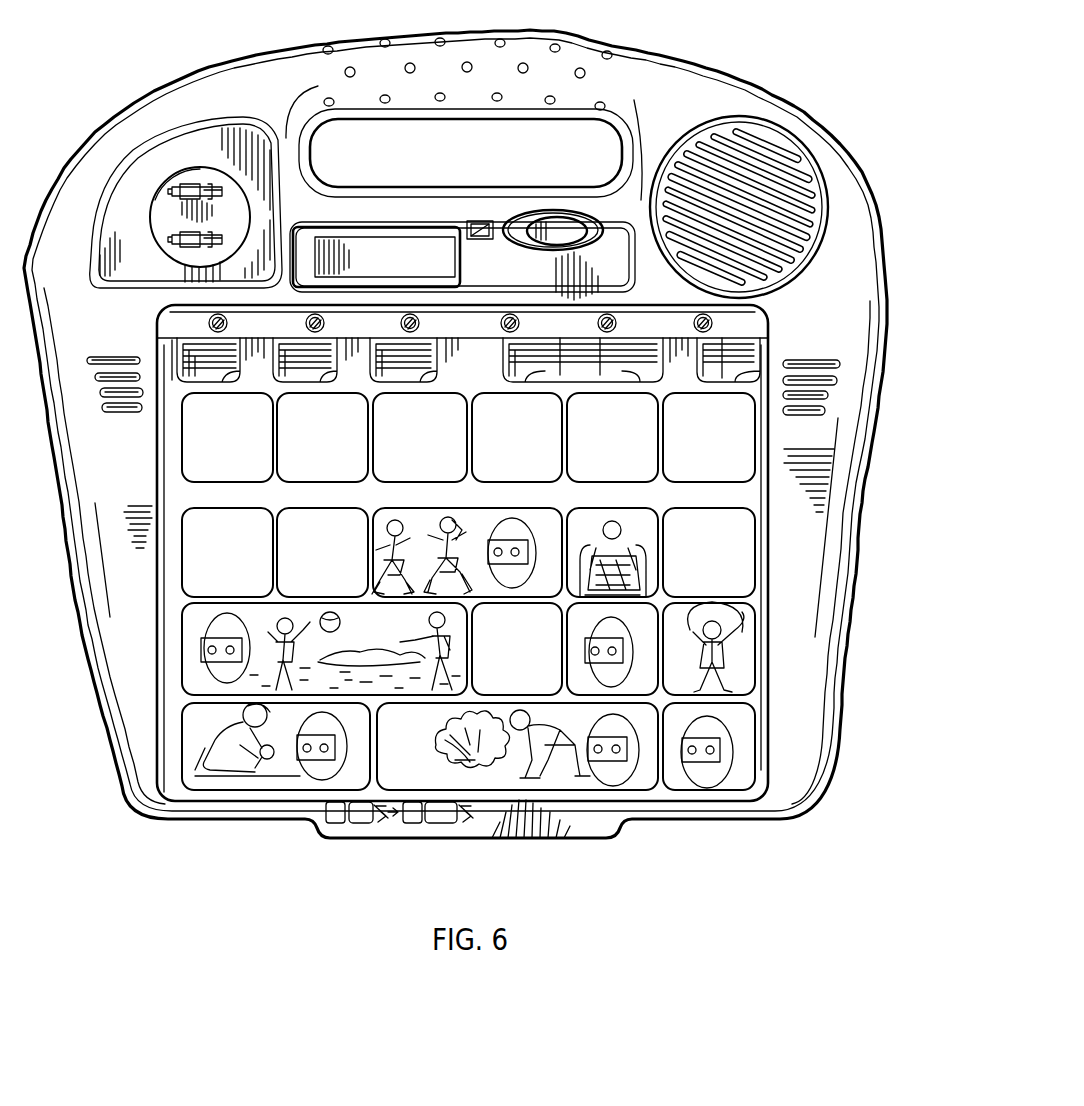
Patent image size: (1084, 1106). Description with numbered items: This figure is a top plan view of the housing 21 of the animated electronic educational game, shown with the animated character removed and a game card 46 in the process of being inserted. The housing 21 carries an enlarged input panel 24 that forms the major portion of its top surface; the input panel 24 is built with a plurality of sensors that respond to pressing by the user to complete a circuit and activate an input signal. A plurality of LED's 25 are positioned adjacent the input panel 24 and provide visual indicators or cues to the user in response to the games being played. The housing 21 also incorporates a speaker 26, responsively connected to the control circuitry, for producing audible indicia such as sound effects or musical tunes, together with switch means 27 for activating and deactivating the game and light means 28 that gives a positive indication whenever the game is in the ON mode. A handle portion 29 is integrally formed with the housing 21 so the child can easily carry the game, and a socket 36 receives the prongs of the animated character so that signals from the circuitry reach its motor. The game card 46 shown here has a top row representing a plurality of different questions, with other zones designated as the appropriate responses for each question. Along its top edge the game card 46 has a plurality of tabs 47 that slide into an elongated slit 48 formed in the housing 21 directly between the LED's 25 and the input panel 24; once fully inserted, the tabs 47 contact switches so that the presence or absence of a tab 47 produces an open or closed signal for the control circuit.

The housing 21 is at (765, 80).
The input panel 24 is at (176, 342).
The LED's 25 is at (325, 322).
The speaker 26 is at (778, 210).
The switch means 27 is at (566, 225).
The light means 28 is at (480, 221).
The handle portion 29 is at (509, 80).
The socket 36 is at (176, 240).
The game card 46 is at (185, 516).
The tabs 47 is at (262, 352).
The elongated slit 48 is at (536, 347).